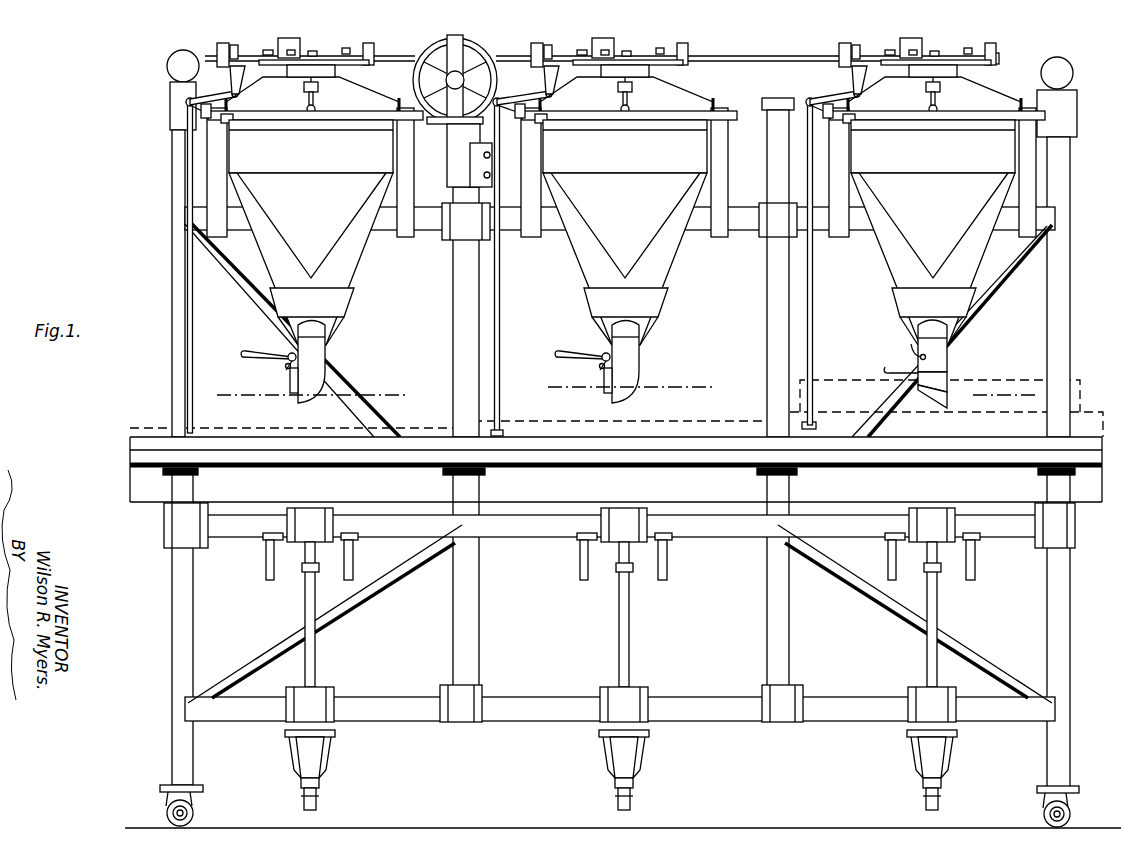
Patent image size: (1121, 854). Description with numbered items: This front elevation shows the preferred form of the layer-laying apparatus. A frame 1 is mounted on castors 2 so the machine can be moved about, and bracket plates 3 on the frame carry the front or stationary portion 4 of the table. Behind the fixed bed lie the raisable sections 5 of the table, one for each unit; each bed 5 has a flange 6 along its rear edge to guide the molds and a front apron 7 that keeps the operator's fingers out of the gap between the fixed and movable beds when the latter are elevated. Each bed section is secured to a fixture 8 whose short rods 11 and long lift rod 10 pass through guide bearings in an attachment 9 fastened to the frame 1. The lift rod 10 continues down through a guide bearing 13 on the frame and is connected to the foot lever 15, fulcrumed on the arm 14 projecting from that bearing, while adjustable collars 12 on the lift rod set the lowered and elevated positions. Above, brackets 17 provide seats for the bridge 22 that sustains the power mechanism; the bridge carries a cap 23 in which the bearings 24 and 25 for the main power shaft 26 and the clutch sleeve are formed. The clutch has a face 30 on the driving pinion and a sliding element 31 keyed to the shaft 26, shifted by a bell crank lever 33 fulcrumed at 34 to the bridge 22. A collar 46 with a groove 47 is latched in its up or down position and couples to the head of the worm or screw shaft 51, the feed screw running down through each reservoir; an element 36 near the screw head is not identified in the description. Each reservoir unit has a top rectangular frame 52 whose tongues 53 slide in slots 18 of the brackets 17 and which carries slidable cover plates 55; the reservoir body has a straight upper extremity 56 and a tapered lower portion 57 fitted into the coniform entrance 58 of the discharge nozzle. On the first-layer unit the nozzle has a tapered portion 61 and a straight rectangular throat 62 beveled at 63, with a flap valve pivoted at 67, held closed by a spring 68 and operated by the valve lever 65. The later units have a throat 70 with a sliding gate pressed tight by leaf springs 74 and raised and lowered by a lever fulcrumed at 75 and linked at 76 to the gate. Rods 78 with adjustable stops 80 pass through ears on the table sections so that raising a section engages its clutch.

The frame 1 is at (766, 184).
The castors 2 is at (194, 812).
The bracket plates 3 is at (160, 473).
The stationary portion of the table 4 is at (130, 450).
The raisable table section 5 is at (136, 431).
The flange 6 is at (616, 412).
The front apron 7 is at (616, 487).
The fixture 8 is at (264, 541).
The attachment 9 is at (300, 545).
The lift rod 10 is at (305, 597).
The rods 11 is at (265, 570).
The adjustable collars 12 is at (314, 573).
The guide bearing 13 is at (318, 690).
The arm 14 is at (319, 765).
The foot lever 15 is at (322, 741).
The brackets 17 is at (294, 172).
The slots 18 is at (183, 135).
The bridge 22 is at (323, 92).
The cap 23 is at (975, 58).
The bearing 24 is at (314, 73).
The bearing 25 is at (315, 109).
The main power shaft 26 is at (768, 62).
The clutch element 30 is at (223, 80).
The sliding element of the clutch 31 is at (274, 52).
The bell crank lever 33 is at (188, 97).
The fulcrum 34 is at (172, 115).
The nozzle 36 is at (948, 102).
The collar 46 is at (312, 96).
The groove 47 is at (497, 82).
The worm or screw shaft 51 is at (298, 111).
The top rectangular frame 52 is at (311, 232).
The tongues 53 is at (242, 134).
The cover plates 55 is at (311, 139).
The upper extremity of the reservoir 56 is at (824, 232).
The lower portion of the reservoir 57 is at (331, 308).
The coniform entrance 58 is at (326, 302).
The tapered portion 61 is at (953, 346).
The straight throat 62 is at (943, 386).
The beveled-cut lower end 63 is at (932, 412).
The valve handle or lever 65 is at (884, 360).
The pivot 67 is at (953, 361).
The spring 68 is at (892, 344).
The throat 70 is at (325, 362).
The leaf springs 74 is at (254, 341).
The fulcrum 75 is at (276, 348).
The link 76 is at (271, 377).
The rods 78 is at (165, 266).
The adjustable stops 80 is at (670, 424).